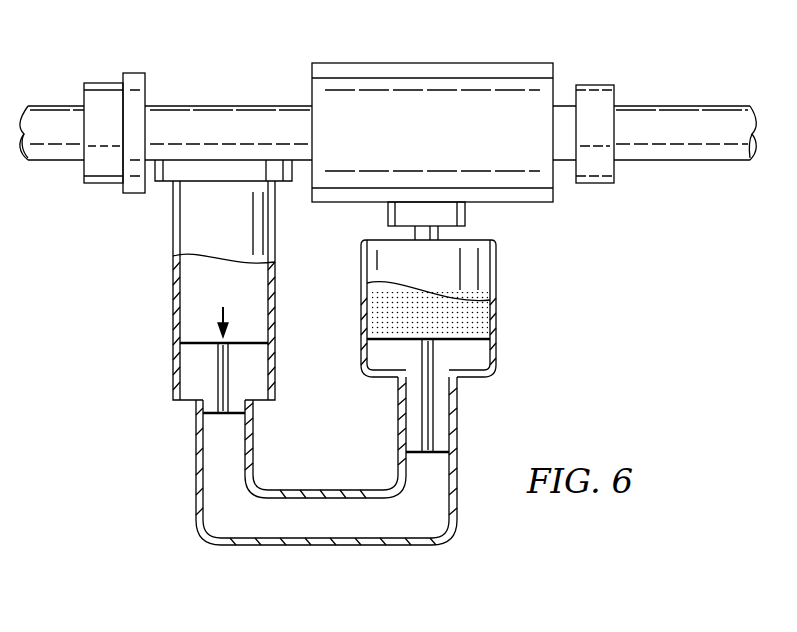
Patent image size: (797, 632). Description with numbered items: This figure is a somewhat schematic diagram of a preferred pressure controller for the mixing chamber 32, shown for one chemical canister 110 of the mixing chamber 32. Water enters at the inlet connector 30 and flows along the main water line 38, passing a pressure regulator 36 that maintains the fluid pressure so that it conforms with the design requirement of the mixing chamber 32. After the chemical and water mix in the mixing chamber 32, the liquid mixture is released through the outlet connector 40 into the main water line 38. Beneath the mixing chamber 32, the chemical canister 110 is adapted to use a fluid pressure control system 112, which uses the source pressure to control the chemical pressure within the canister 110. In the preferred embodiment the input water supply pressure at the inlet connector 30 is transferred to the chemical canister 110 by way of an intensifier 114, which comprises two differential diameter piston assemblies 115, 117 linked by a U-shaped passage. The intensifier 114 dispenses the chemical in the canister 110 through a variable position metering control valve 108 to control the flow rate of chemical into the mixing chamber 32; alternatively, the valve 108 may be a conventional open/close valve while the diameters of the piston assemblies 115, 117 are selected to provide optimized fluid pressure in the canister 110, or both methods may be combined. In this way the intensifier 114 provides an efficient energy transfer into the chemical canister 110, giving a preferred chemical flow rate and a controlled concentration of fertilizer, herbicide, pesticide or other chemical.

The main water line 38 is at (56, 105).
The inlet connector 30 is at (104, 183).
The pressure regulator 36 is at (134, 73).
The outlet connector 40 is at (597, 85).
The mixing chamber 32 is at (497, 63).
The variable position metering control valve 108 is at (465, 215).
The chemical canister 110 is at (497, 315).
The fluid pressure control system 112 is at (660, 297).
The intensifier 114 is at (308, 546).
The piston assembly 115 is at (210, 372).
The piston assembly 117 is at (433, 422).